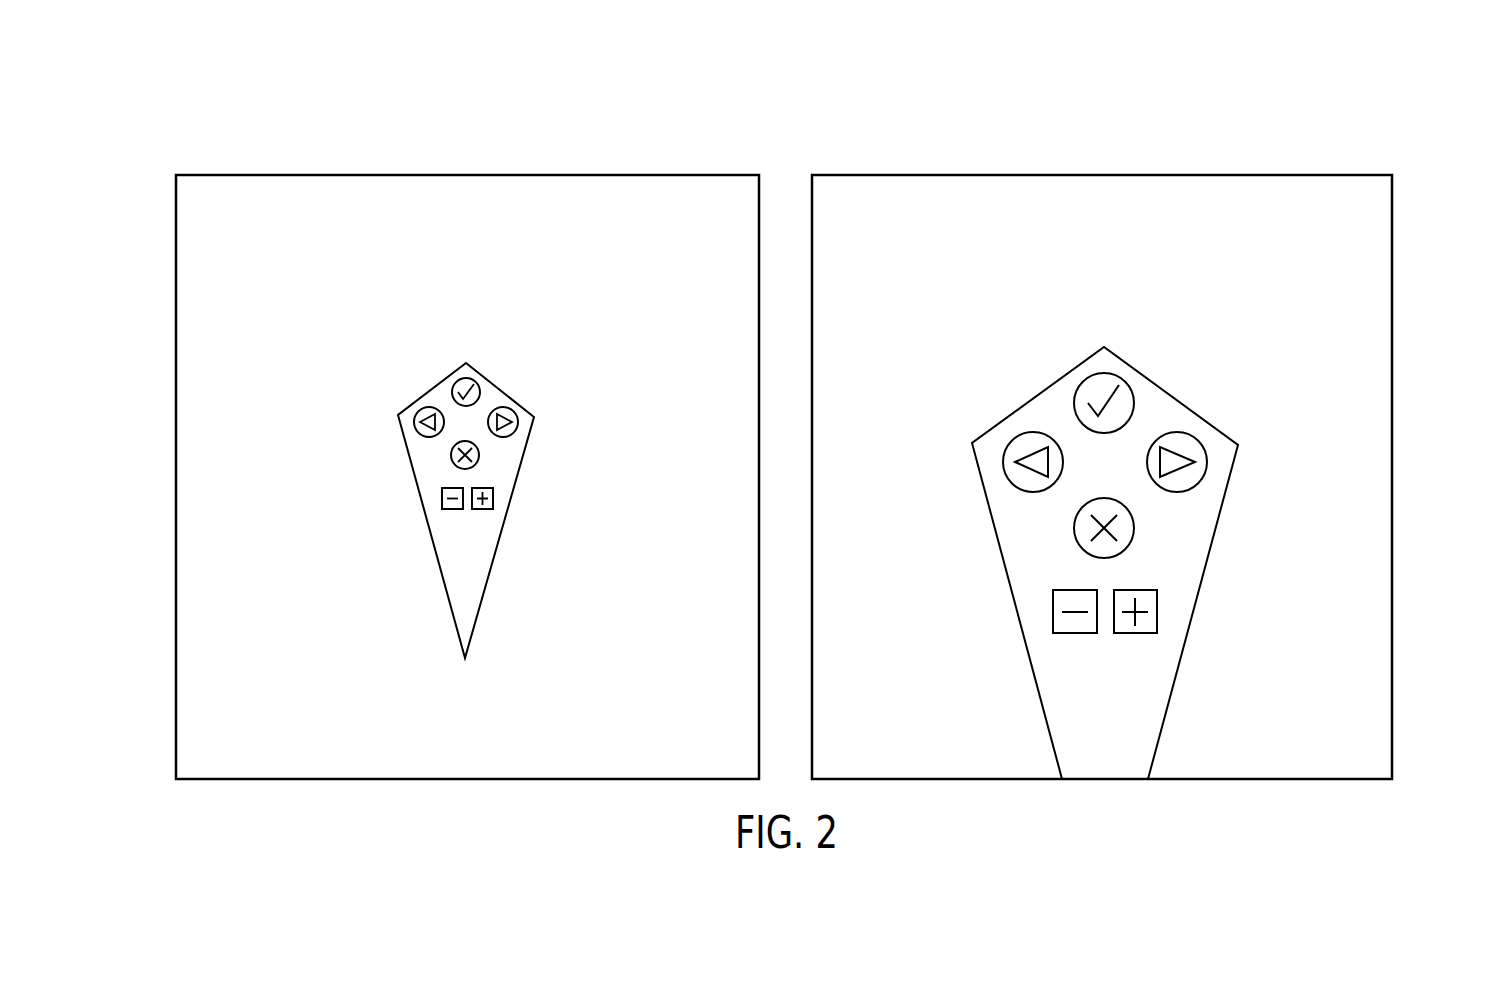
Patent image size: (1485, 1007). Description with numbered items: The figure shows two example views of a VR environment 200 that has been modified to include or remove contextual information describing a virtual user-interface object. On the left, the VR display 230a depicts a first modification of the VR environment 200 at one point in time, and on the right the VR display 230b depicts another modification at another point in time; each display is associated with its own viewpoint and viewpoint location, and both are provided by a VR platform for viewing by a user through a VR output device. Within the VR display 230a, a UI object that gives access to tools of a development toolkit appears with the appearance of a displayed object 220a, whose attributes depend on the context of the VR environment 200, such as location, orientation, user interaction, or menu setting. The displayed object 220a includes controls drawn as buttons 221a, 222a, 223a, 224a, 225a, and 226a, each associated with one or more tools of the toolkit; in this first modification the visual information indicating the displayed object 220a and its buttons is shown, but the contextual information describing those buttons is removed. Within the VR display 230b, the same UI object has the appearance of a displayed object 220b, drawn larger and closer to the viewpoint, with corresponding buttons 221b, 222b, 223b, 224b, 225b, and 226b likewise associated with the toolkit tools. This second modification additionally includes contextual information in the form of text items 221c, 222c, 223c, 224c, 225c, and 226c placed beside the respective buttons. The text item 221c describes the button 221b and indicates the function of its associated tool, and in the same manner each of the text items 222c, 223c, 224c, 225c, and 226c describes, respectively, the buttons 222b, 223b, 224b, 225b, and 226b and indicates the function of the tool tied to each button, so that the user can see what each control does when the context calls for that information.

The VR environment 200 is at (164, 123).
The VR display 230a is at (176, 225).
The VR display 230b is at (1392, 234).
The displayed object 220a is at (430, 390).
The button 221a is at (414, 422).
The button 222a is at (480, 393).
The button 223a is at (518, 422).
The button 224a is at (479, 456).
The button 225a is at (441, 500).
The button 226a is at (494, 500).
The displayed object 220b is at (1026, 403).
The button 221b is at (1003, 462).
The button 222b is at (1133, 396).
The button 223b is at (1207, 460).
The button 224b is at (1133, 528).
The button 225b is at (1053, 625).
The button 226b is at (1157, 623).
The text item 221c is at (928, 505).
The text item 222c is at (1058, 345).
The text item 223c is at (1262, 515).
The text item 224c is at (1003, 552).
The text item 225c is at (980, 595).
The text item 226c is at (1227, 595).